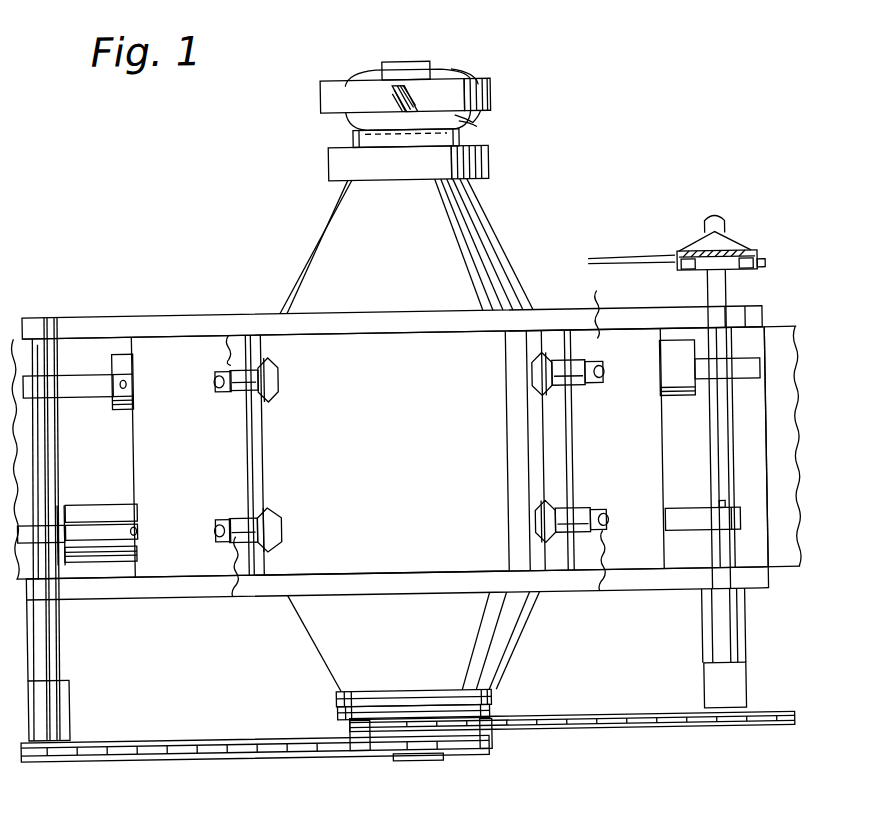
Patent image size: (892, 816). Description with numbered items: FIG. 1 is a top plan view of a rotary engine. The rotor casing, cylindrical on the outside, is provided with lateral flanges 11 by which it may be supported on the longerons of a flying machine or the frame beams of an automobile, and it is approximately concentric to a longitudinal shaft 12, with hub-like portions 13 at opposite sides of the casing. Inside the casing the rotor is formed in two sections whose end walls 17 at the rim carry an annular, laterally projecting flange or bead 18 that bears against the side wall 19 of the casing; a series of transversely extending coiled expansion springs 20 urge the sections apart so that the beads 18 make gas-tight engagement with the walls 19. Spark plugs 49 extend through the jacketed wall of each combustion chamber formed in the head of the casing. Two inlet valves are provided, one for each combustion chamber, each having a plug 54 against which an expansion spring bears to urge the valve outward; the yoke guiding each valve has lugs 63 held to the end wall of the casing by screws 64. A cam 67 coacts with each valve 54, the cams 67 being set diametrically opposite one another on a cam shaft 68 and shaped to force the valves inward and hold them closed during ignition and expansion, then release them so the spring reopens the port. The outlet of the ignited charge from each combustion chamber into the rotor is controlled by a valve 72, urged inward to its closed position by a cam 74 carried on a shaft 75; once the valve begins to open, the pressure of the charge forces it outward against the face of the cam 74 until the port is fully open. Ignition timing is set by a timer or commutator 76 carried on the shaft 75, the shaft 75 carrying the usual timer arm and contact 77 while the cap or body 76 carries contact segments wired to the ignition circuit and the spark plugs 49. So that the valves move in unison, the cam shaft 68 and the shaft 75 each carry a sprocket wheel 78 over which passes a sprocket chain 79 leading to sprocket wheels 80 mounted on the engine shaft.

The lateral flanges 11 is at (778, 566).
The longitudinal shaft 12 is at (400, 70).
The hub-like portions 13 is at (495, 235).
The end walls 17 is at (27, 352).
The annular flange or bead 18 is at (398, 462).
The side wall 19 is at (389, 325).
The coiled expansion springs 20 is at (122, 462).
The spark plugs 49 is at (266, 384).
The plug 54 is at (118, 410).
The lugs 63 is at (126, 386).
The screws 64 is at (118, 389).
The cam 67 is at (78, 376).
The cam shaft 68 is at (46, 462).
The valve 72 is at (670, 404).
The cam 74 is at (730, 368).
The shaft 75 is at (714, 445).
The timer or commutator 76 is at (736, 252).
The timer arm and contact 77 is at (750, 280).
The sprocket wheels 78 is at (99, 763).
The sprocket chains 79 is at (207, 742).
The sprocket wheels 80 is at (362, 745).